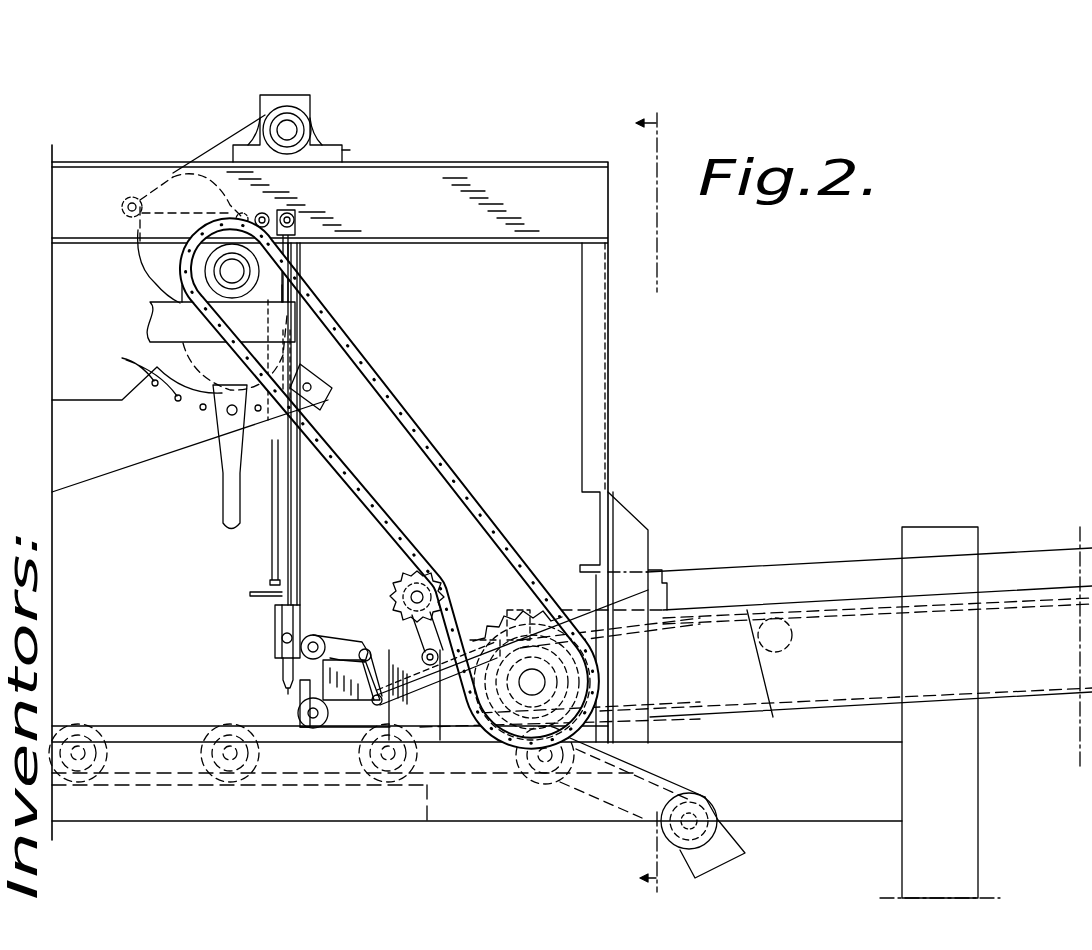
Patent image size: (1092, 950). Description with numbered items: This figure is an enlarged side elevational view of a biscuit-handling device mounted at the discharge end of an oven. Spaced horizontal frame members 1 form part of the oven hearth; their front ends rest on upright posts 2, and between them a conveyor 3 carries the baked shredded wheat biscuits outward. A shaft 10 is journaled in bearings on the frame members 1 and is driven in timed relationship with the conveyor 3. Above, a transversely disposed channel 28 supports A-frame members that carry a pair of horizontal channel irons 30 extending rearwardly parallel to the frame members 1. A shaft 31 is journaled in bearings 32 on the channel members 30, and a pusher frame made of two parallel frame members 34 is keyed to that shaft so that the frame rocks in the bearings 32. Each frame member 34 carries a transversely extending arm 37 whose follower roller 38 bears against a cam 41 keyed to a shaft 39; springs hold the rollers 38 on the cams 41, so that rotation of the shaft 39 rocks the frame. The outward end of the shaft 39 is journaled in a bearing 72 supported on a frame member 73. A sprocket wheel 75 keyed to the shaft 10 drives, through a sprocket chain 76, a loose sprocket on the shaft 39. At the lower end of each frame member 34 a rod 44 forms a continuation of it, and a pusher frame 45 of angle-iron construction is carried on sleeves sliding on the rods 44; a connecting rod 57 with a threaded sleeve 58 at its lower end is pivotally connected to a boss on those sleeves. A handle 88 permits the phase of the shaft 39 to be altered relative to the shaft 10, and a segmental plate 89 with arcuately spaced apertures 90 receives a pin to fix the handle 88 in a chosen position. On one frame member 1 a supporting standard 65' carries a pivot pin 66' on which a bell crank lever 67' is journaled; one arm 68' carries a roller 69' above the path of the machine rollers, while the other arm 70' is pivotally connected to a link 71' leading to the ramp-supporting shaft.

The frame member 1 is at (823, 812).
The upright post 2 is at (967, 790).
The conveyor 3 is at (664, 502).
The shaft 10 is at (545, 684).
The channel 28 is at (598, 522).
The channel iron 30 is at (457, 243).
The shaft 31 is at (292, 130).
The bearing 32 is at (343, 154).
The frame member 34 is at (298, 527).
The arm 37 is at (217, 147).
The follower roller 38 is at (123, 203).
The shaft 39 is at (227, 268).
The cam 41 is at (143, 252).
The rod 44 is at (283, 668).
The pusher frame 45 is at (263, 592).
The connecting rod 57 is at (288, 482).
The sleeve 58 is at (287, 617).
The supporting standard 65' is at (378, 663).
The pivot pin 66' is at (320, 617).
The bell crank lever 67' is at (340, 627).
The arm 68' is at (340, 695).
The roller 69' is at (315, 713).
The arm 70' is at (352, 651).
The link 71' is at (512, 647).
The bearing 72 is at (257, 288).
The frame member 73 is at (157, 317).
The sprocket wheel 75 is at (497, 612).
The sprocket chain 76 is at (423, 437).
The handle 88 is at (225, 447).
The segmental plate 89 is at (168, 443).
The aperture 90 is at (137, 373).